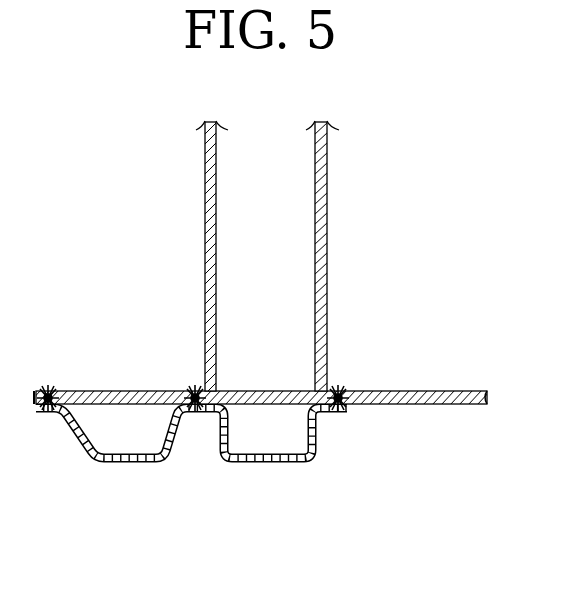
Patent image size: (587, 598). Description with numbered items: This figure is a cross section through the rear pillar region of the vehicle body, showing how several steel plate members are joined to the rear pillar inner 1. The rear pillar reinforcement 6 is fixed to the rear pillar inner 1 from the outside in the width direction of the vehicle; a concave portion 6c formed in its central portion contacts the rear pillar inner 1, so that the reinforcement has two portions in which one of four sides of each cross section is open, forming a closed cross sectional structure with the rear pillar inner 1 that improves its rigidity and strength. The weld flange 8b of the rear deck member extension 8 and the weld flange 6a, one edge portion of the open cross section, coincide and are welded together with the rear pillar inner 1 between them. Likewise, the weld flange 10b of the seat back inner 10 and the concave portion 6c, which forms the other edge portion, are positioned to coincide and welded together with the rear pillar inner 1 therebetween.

The rear pillar inner 1 is at (423, 406).
The rear pillar reinforcement 6 is at (275, 464).
The weld flange 6a is at (347, 413).
The concave portion 6c is at (200, 410).
The rear deck member extension 8 is at (327, 236).
The weld flange 8b is at (339, 388).
The seat back inner 10 is at (205, 238).
The weld flange 10b is at (192, 386).